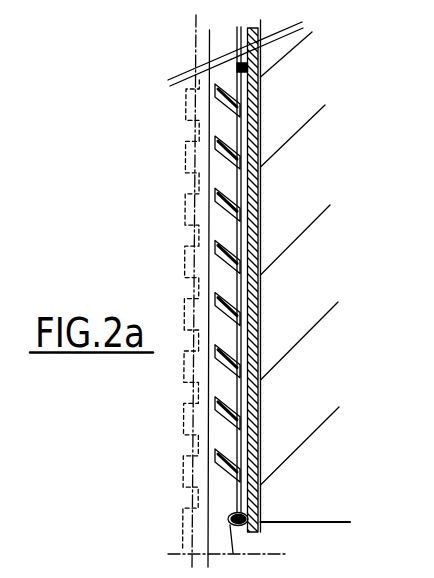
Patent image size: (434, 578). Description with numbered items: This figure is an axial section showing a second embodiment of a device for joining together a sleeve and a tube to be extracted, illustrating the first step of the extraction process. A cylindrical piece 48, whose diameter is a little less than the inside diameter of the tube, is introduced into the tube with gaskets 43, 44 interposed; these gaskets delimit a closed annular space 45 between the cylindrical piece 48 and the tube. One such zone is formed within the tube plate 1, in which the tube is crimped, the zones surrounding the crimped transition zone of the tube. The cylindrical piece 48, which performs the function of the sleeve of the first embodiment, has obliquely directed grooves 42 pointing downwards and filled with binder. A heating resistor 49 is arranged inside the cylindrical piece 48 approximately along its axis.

The tube plate 1 is at (305, 508).
The obliquely directed grooves 42 is at (222, 96).
The gasket 43 is at (248, 512).
The gasket 44 is at (247, 69).
The closed annular space 45 is at (241, 141).
The cylindrical piece 48 is at (228, 538).
The heating resistor 49 is at (199, 232).